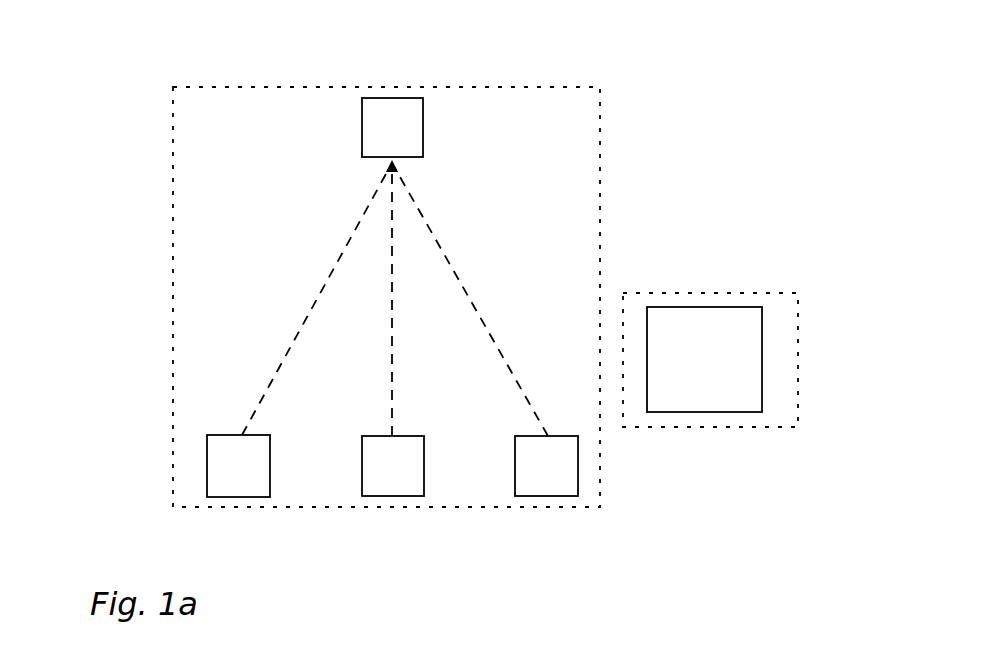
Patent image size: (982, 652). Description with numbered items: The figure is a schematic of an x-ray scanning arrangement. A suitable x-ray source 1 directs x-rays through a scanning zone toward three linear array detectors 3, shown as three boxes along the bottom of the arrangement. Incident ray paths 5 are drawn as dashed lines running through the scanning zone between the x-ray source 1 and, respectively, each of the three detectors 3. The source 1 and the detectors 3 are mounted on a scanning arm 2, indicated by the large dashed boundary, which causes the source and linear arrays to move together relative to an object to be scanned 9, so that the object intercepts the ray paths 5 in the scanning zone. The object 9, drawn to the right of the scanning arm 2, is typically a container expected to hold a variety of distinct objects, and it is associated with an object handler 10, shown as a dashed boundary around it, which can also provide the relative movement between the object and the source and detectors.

The x-ray source 1 is at (368, 113).
The scanning arm 2 is at (600, 140).
The linear array detectors 3 is at (190, 469).
The incident ray paths 5 is at (290, 305).
The object to be scanned 9 is at (735, 322).
The object handler 10 is at (798, 343).